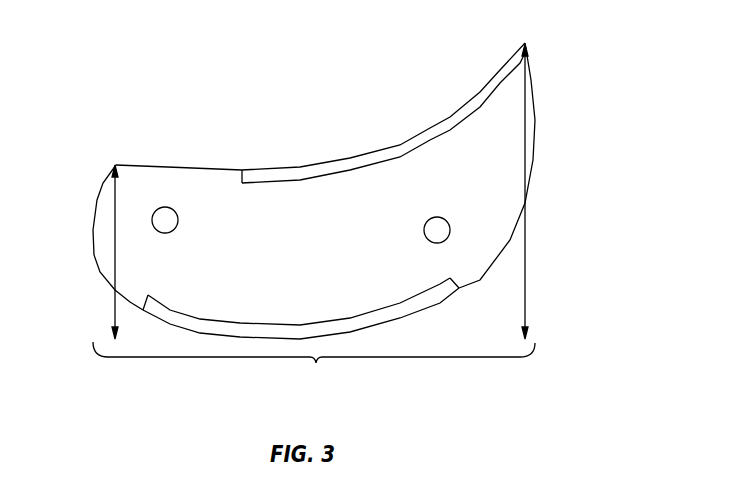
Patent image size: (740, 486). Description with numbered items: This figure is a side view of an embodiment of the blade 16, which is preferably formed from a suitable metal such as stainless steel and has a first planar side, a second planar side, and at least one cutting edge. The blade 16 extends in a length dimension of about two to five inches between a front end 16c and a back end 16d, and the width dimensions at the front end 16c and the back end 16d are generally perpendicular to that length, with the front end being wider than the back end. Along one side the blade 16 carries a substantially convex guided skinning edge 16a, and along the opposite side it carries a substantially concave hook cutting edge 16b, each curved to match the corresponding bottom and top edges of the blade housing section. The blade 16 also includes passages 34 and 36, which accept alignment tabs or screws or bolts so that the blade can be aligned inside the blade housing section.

The blade 16 is at (314, 278).
The guided skinning edge 16a is at (390, 322).
The hook cutting edge 16b is at (405, 142).
The front end 16c is at (537, 117).
The back end 16d is at (113, 206).
The passage 34 is at (433, 232).
The passage 36 is at (166, 219).